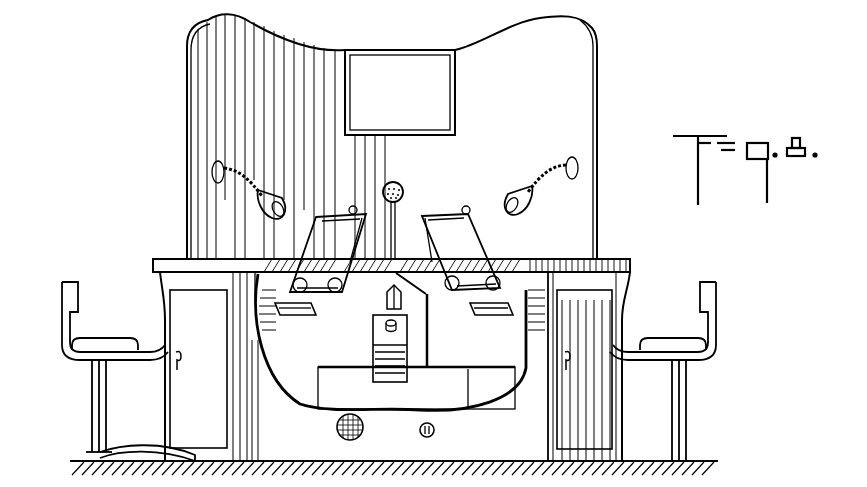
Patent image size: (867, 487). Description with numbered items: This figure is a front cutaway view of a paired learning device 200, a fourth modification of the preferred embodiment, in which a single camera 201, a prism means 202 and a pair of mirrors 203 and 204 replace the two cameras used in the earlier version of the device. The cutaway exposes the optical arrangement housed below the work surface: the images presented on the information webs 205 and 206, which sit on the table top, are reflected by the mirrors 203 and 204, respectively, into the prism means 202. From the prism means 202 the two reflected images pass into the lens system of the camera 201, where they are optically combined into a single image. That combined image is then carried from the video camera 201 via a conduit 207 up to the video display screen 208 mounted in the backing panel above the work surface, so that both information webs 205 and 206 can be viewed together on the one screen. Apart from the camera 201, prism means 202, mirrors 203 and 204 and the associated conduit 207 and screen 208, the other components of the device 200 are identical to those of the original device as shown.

The paired learning device 200 is at (652, 245).
The camera 201 is at (373, 352).
The prism means 202 is at (388, 298).
The mirror 203 is at (298, 318).
The mirror 204 is at (485, 318).
The information web 205 is at (320, 248).
The information web 206 is at (463, 245).
The conduit 207 is at (395, 214).
The video display screen 208 is at (393, 85).